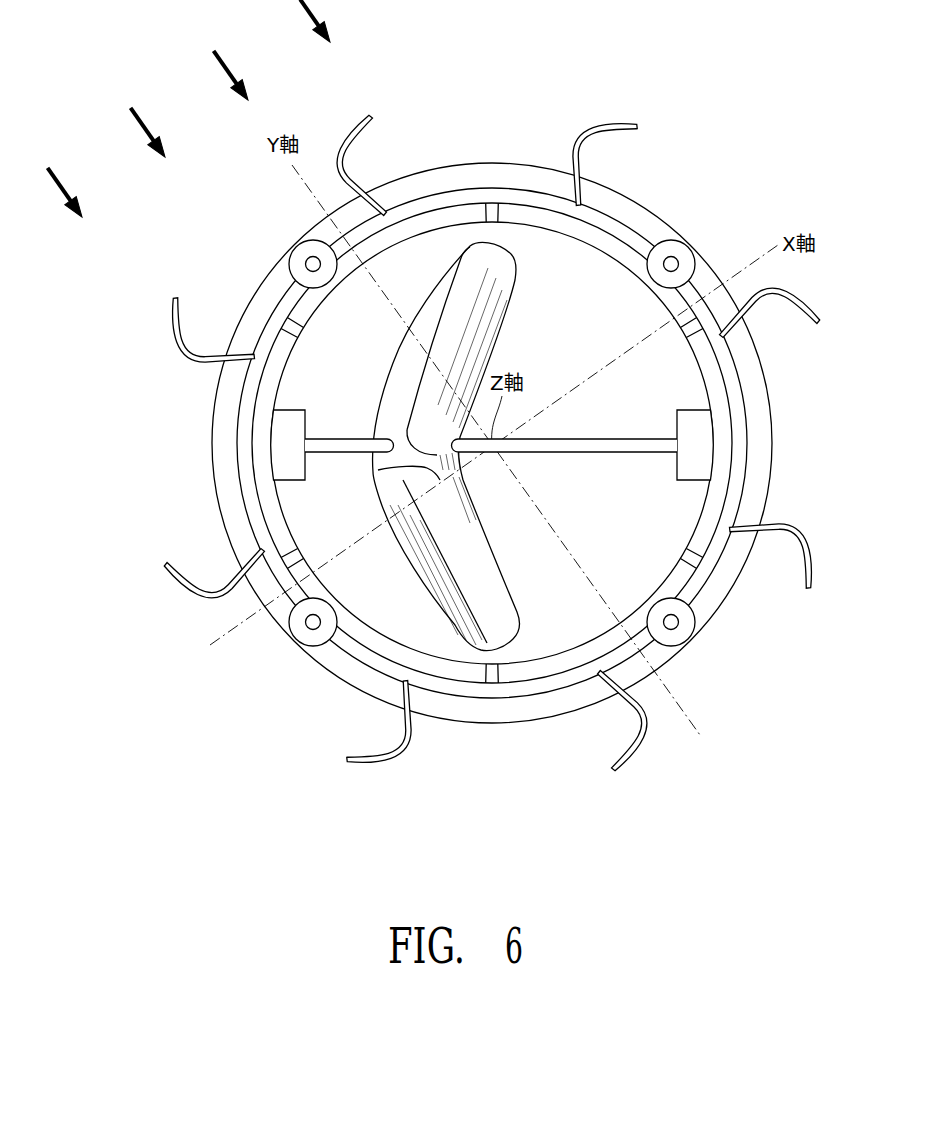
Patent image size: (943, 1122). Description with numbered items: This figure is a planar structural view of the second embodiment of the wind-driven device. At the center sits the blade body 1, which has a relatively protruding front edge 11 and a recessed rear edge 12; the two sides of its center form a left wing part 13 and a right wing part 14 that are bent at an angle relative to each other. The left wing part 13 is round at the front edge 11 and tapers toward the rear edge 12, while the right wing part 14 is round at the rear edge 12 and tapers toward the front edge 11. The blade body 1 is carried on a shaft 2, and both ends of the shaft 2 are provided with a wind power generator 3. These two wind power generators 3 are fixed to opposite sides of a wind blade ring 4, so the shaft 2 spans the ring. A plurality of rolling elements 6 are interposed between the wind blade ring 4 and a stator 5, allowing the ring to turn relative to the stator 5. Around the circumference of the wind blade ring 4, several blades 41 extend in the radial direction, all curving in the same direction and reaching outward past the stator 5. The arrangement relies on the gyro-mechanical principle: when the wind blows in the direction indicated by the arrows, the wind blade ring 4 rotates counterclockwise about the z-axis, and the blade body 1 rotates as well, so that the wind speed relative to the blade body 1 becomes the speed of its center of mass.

The blade body 1 is at (440, 446).
The shaft 2 is at (348, 447).
The wind power generator 3 is at (288, 420).
The wind blade ring 4 is at (742, 427).
The stator 5 is at (715, 277).
The rolling element 6 is at (663, 252).
The front edge 11 is at (372, 418).
The rear edge 12 is at (502, 572).
The left wing part 13 is at (475, 292).
The right wing part 14 is at (483, 607).
The blade 41 is at (772, 303).